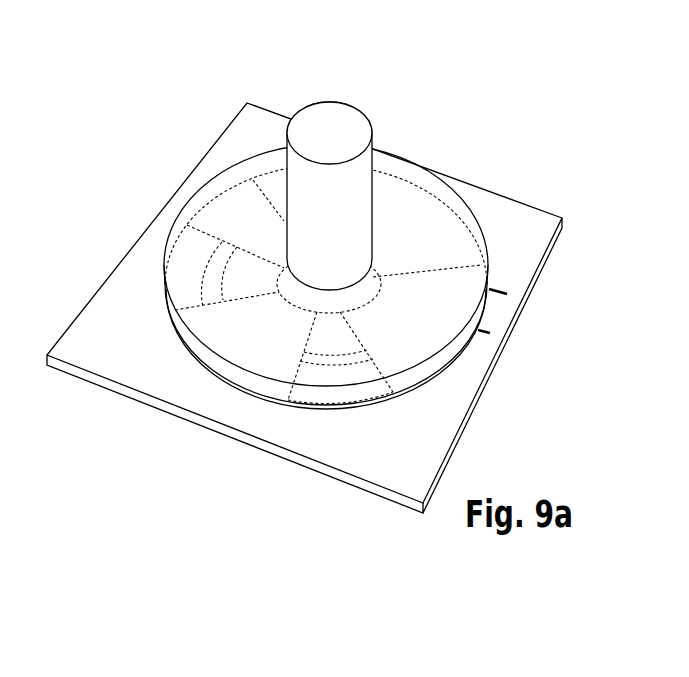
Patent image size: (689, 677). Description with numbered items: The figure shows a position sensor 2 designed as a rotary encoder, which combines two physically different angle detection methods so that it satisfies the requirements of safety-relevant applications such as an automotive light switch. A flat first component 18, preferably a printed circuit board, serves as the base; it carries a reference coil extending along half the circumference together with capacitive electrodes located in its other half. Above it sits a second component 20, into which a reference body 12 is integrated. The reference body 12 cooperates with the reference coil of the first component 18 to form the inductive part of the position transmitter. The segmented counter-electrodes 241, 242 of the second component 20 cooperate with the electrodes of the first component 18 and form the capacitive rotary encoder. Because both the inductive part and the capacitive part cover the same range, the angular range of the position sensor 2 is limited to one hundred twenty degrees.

The position sensor 2 is at (304, 288).
The reference body 12 is at (398, 203).
The first component 18 is at (513, 215).
The second component 20 is at (329, 118).
The counter-electrode 241 is at (333, 337).
The counter-electrode 242 is at (193, 288).